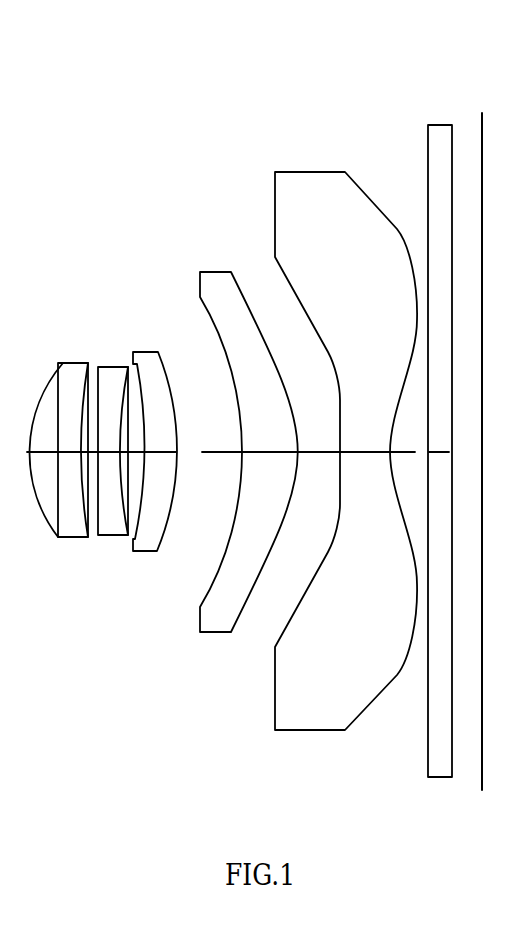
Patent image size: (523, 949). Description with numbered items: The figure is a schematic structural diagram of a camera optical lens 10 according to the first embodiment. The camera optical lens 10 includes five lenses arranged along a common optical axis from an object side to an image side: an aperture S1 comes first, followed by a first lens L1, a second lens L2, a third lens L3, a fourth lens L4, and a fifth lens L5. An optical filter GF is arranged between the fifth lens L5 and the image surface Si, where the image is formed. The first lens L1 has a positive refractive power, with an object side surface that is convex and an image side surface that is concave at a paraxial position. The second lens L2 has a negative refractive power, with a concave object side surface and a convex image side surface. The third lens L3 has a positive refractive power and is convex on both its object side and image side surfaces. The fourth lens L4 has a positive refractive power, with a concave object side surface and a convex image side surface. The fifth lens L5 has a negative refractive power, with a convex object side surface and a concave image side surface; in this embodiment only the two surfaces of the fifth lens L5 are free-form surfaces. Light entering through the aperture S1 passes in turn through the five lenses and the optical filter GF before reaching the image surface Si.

The camera optical lens 10 is at (278, 52).
The aperture S1 is at (60, 555).
The first lens L1 is at (59, 438).
The second lens L2 is at (113, 439).
The third lens L3 is at (155, 437).
The fourth lens L4 is at (249, 440).
The fifth lens L5 is at (346, 437).
The optical filter GF is at (439, 438).
The image surface Si is at (480, 437).